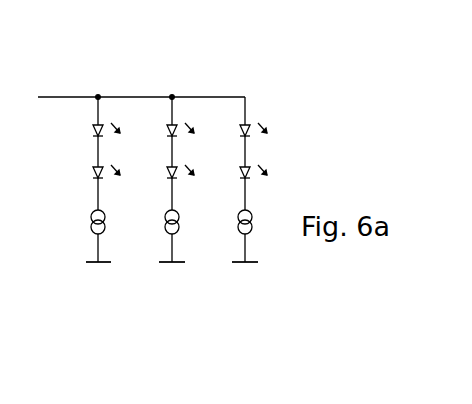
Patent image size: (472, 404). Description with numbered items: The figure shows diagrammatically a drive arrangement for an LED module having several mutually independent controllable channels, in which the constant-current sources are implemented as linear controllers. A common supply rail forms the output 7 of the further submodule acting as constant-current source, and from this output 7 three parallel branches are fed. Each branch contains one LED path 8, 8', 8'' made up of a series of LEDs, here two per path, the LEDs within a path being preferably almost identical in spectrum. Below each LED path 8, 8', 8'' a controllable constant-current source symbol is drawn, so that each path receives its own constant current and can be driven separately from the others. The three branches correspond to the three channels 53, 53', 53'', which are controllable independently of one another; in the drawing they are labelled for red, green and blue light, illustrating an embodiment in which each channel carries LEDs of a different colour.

The output 7 is at (57, 96).
The LED path 8 is at (89, 195).
The LED path 8' is at (190, 195).
The LED path 8'' is at (266, 195).
The channel 53 is at (95, 318).
The channel 53' is at (168, 318).
The channel 53'' is at (242, 318).